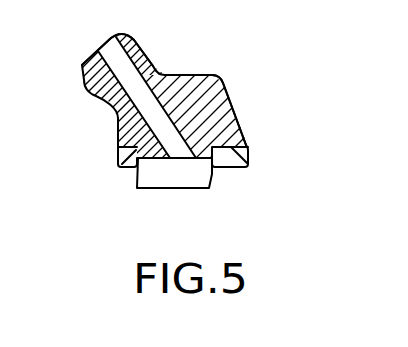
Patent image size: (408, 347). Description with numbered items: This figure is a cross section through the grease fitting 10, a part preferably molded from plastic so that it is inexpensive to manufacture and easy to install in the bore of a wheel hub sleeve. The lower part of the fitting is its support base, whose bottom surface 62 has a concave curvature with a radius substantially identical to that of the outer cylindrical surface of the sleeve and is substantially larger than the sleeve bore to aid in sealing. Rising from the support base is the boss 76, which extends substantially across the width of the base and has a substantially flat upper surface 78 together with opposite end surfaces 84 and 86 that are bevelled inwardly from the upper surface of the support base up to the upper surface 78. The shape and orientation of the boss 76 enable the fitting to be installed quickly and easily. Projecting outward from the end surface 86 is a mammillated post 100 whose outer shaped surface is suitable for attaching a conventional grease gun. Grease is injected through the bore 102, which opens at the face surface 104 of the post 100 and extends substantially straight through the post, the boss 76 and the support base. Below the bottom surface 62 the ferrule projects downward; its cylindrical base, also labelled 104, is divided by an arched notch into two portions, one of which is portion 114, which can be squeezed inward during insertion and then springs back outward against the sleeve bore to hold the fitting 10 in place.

The grease fitting 10 is at (255, 66).
The bottom surface 62 is at (248, 168).
The boss 76 is at (208, 77).
The upper surface 78 is at (165, 74).
The end surface 84 is at (233, 103).
The end surface 86 is at (118, 119).
The mammillated post 100 is at (134, 50).
The bore 102 is at (103, 56).
The face surface 104 is at (114, 41).
The portion 114 is at (195, 181).